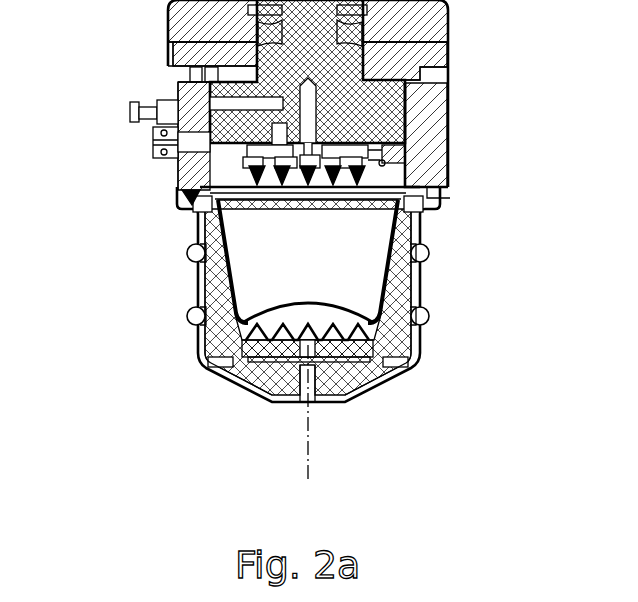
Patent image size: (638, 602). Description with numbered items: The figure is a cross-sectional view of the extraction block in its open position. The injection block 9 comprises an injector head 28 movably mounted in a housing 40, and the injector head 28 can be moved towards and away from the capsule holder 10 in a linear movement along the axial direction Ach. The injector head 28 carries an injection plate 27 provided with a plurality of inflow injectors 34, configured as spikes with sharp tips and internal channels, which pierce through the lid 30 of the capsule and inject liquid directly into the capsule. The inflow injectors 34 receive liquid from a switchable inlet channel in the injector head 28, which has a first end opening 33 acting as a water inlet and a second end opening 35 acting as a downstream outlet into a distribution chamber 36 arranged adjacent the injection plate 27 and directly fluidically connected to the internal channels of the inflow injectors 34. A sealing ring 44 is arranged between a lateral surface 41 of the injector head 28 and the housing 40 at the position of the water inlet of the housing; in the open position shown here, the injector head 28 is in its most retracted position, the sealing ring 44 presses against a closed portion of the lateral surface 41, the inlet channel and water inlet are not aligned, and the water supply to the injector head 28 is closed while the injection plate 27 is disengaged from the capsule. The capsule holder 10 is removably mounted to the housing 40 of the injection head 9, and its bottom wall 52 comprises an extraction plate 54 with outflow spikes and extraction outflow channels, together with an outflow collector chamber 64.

The injection block 9 is at (464, 62).
The capsule holder 10 is at (464, 268).
The injection plate 27 is at (425, 190).
The injector head 28 is at (360, 108).
The lid 30 is at (184, 208).
The first end opening 33 is at (132, 109).
The inflow injectors 34 is at (400, 217).
The second end opening 35 is at (178, 187).
The distribution chamber 36 is at (397, 155).
The housing 40 is at (412, 92).
The lateral surface 41 is at (158, 143).
The sealing ring 44 is at (177, 156).
The bottom wall 52 is at (422, 312).
The extraction plate 54 is at (232, 357).
The outflow collector chamber 64 is at (302, 405).
The axial direction Ach is at (313, 405).